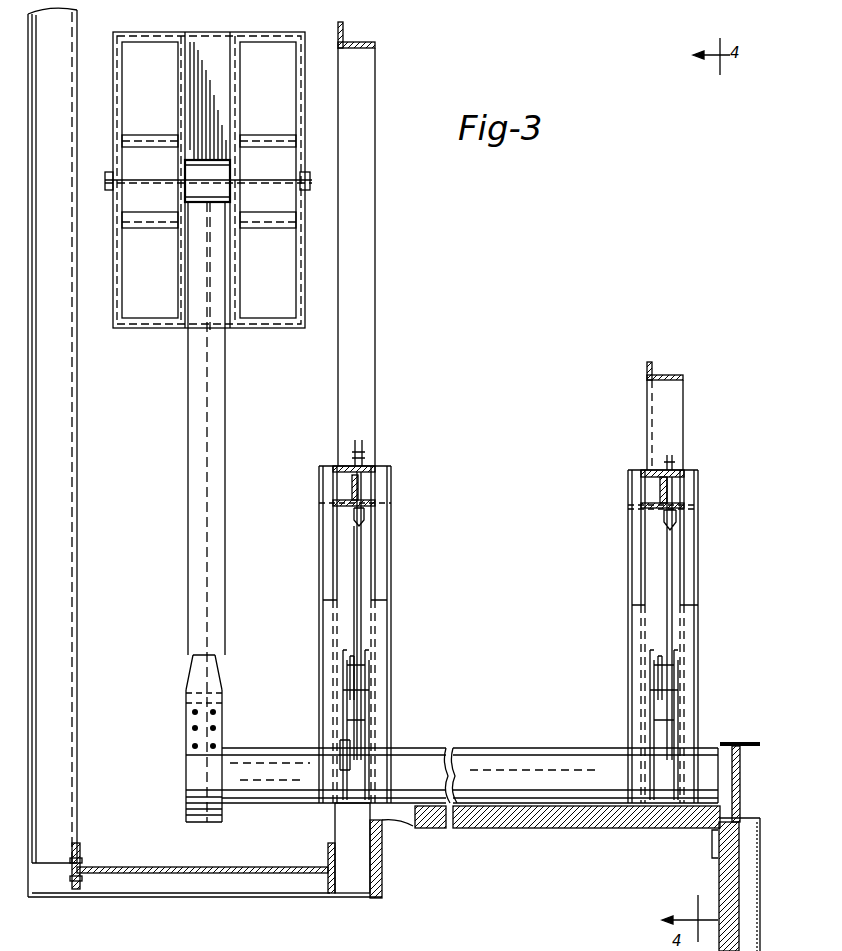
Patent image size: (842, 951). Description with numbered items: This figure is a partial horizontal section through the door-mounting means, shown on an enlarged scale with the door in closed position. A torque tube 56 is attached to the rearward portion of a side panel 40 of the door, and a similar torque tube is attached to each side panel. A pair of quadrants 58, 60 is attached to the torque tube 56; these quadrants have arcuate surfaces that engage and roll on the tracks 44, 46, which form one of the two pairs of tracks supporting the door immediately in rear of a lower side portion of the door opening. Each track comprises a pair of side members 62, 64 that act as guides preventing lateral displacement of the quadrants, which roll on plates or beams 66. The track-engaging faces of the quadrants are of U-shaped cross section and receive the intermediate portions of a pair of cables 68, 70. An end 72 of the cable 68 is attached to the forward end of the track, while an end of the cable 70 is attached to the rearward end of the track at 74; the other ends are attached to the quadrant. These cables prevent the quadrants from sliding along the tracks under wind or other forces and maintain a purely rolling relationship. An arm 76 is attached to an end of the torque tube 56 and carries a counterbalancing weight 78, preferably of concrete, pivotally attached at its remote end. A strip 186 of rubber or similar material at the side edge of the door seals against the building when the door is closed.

The side panel 40 is at (525, 828).
The track 44 is at (388, 632).
The track 46 is at (695, 620).
The torque tube 56 is at (535, 758).
The quadrant 58 is at (362, 705).
The quadrant 60 is at (668, 705).
The side member 62 is at (319, 540).
The side member 64 is at (388, 533).
The plate or beam 66 is at (366, 571).
The cable 68 is at (345, 697).
The cable 70 is at (360, 612).
The cable end 72 is at (345, 740).
The cable attachment point 74 is at (362, 512).
The arm 76 is at (193, 567).
The counterbalancing weight 78 is at (255, 316).
The sealing strip 186 is at (396, 826).